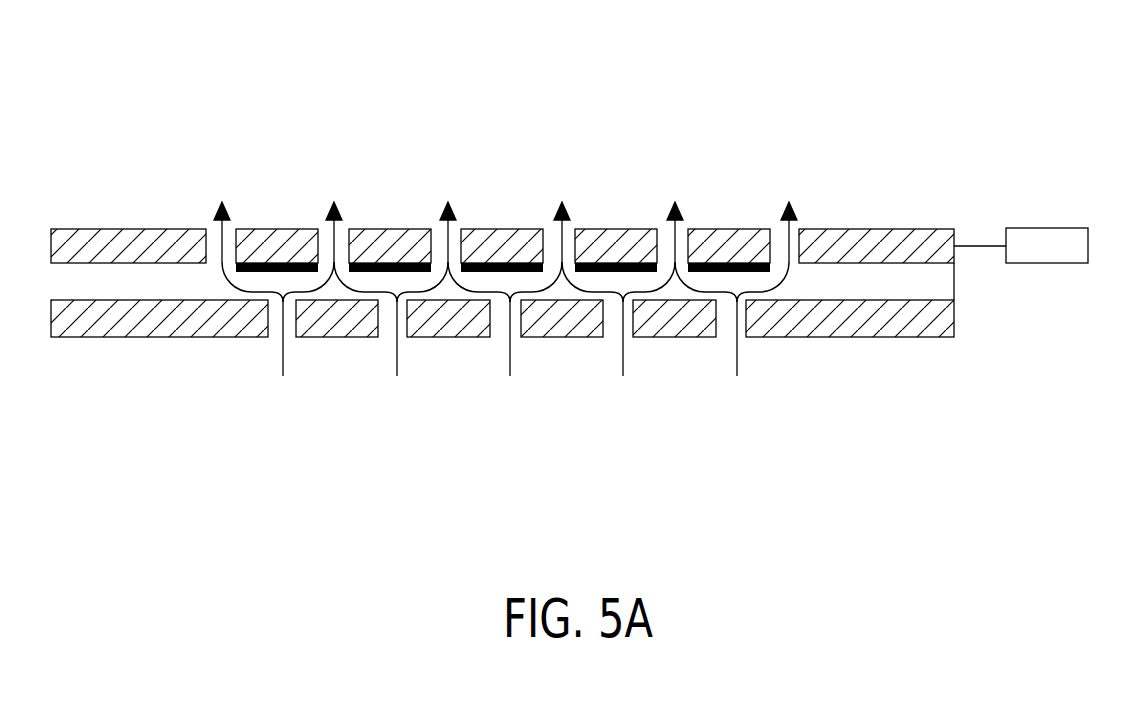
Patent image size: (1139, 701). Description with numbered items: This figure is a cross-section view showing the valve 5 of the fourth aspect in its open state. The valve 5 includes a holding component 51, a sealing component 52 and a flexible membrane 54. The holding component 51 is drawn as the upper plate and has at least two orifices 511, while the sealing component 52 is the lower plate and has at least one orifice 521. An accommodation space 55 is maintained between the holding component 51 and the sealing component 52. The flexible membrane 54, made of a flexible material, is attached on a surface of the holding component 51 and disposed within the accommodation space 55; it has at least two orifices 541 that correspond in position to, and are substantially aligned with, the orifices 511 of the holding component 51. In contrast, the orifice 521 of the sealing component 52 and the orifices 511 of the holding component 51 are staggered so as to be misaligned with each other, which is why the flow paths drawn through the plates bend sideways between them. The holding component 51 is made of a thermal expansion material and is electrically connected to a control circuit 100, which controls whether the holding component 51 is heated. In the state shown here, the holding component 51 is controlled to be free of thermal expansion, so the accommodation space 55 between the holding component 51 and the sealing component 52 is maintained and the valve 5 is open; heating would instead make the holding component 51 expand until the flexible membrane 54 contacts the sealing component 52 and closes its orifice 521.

The valve 5 is at (1123, 62).
The holding component 51 is at (876, 250).
The orifices 511 is at (688, 223).
The sealing component 52 is at (940, 328).
The orifice 521 is at (517, 342).
The flexible membrane 54 is at (743, 262).
The orifices 541 is at (458, 263).
The accommodation space 55 is at (877, 293).
The control circuit 100 is at (1045, 228).